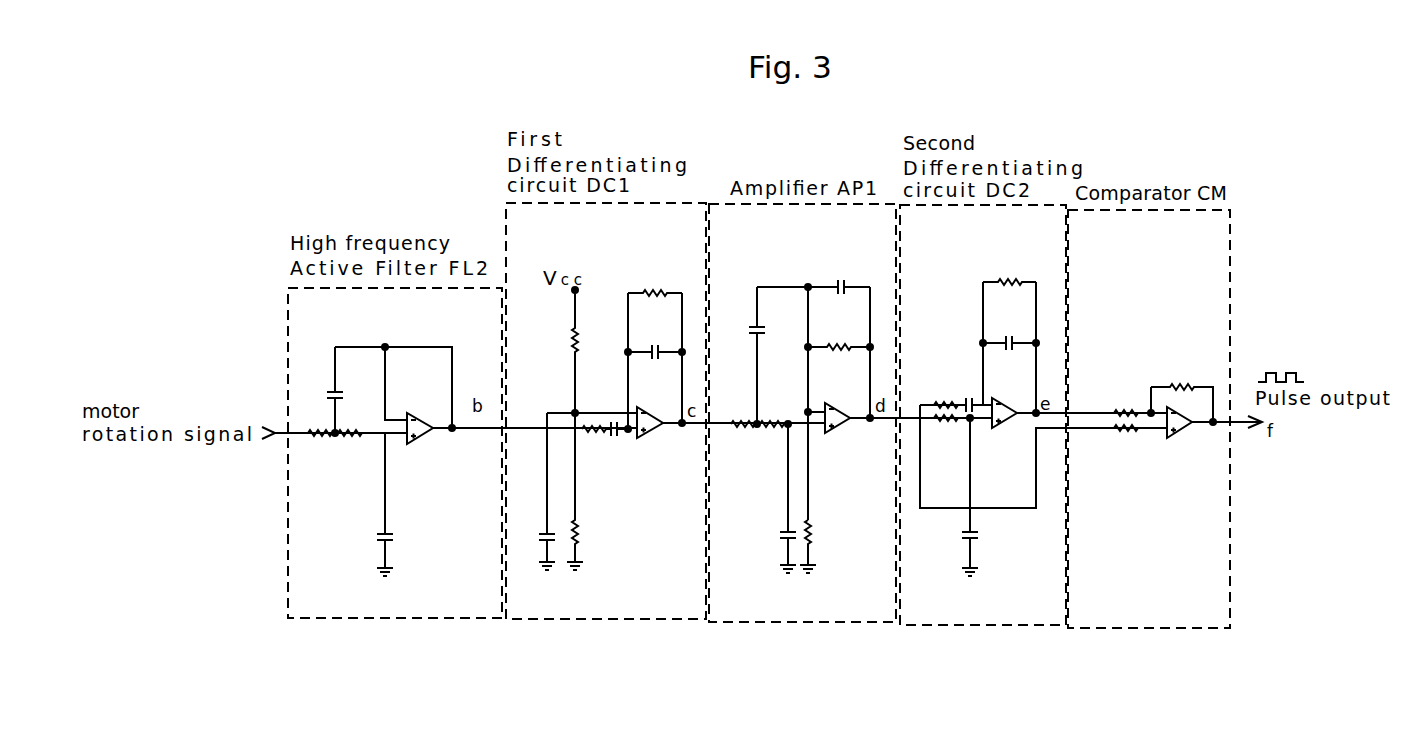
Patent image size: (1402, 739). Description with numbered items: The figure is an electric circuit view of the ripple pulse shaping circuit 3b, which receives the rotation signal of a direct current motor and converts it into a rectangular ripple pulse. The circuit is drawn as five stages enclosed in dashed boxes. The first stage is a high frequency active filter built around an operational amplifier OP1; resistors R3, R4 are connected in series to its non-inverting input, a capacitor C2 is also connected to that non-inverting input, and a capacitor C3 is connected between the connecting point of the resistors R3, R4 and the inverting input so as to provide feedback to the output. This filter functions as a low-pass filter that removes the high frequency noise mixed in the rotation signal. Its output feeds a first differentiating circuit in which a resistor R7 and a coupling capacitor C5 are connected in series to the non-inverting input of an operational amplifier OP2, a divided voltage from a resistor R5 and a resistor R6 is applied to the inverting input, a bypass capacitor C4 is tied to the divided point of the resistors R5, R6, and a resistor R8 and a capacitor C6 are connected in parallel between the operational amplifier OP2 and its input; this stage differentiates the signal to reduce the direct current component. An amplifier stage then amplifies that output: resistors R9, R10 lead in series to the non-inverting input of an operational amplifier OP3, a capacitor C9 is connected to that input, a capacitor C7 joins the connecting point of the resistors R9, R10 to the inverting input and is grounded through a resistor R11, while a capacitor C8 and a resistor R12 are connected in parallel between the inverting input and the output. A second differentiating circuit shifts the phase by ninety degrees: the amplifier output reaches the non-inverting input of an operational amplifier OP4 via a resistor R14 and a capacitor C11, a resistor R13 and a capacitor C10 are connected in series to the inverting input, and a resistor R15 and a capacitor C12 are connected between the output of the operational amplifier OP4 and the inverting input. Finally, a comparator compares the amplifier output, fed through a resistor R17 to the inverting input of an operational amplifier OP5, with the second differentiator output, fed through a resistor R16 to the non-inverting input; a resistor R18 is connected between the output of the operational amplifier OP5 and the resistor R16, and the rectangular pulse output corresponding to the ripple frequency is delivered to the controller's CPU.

The resistor R3 is at (310, 430).
The resistor R4 is at (347, 443).
The capacitor C3 is at (353, 390).
The capacitor C2 is at (405, 504).
The operational amplifier OP1 is at (425, 444).
The resistor R5 is at (548, 351).
The bypass capacitor C4 is at (535, 533).
The resistor R6 is at (583, 530).
The resistor R7 is at (602, 580).
The coupling capacitor C5 is at (588, 445).
The resistor R8 is at (655, 282).
The capacitor C6 is at (655, 343).
The operational amplifier OP2 is at (657, 439).
The resistor R9 is at (737, 398).
The resistor R10 is at (765, 437).
The capacitor C7 is at (775, 355).
The capacitor C8 is at (813, 278).
The resistor R12 is at (839, 336).
The capacitor C9 is at (765, 498).
The resistor R11 is at (810, 535).
The operational amplifier OP3 is at (846, 435).
The resistor R13 is at (945, 400).
The capacitor C10 is at (970, 397).
The resistor R14 is at (943, 427).
The capacitor C11 is at (983, 537).
The resistor R15 is at (1009, 271).
The capacitor C12 is at (1009, 334).
The operational amplifier OP4 is at (1003, 430).
The resistor R16 is at (1125, 410).
The resistor R17 is at (1123, 438).
The resistor R18 is at (1182, 391).
The operational amplifier OP5 is at (1178, 439).
The ripple pulse shaping circuit 3b is at (900, 647).